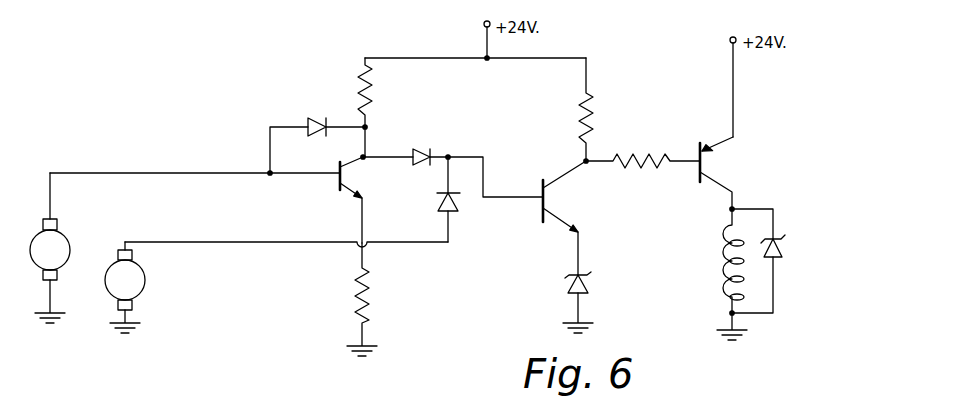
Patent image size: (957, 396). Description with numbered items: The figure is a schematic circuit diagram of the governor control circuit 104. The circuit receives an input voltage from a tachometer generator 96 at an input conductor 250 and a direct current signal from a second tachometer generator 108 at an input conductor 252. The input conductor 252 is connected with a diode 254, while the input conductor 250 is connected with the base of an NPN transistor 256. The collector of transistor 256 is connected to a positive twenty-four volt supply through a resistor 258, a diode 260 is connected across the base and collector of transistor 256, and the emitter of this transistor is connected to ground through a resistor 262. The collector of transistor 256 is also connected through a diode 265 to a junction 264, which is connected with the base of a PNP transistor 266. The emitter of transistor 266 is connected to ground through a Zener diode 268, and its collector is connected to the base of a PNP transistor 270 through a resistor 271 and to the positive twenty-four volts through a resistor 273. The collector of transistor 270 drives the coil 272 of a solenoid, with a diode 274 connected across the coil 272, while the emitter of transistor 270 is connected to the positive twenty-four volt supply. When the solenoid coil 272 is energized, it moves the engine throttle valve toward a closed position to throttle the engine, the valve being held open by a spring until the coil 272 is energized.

The tachometer generator 96 is at (65, 240).
The tachometer generator 108 is at (144, 292).
The governor control circuit 104 is at (262, 128).
The input conductor 250 is at (125, 173).
The input conductor 252 is at (200, 242).
The diode 254 is at (457, 210).
The NPN transistor 256 is at (338, 183).
The resistor 258 is at (368, 100).
The diode 260 is at (314, 118).
The resistor 262 is at (366, 296).
The junction 264 is at (449, 157).
The diode 265 is at (417, 150).
The PNP transistor 266 is at (548, 208).
The Zener diode 268 is at (566, 290).
The PNP transistor 270 is at (700, 150).
The resistor 271 is at (635, 155).
The solenoid coil 272 is at (724, 245).
The resistor 273 is at (590, 110).
The diode 274 is at (780, 240).